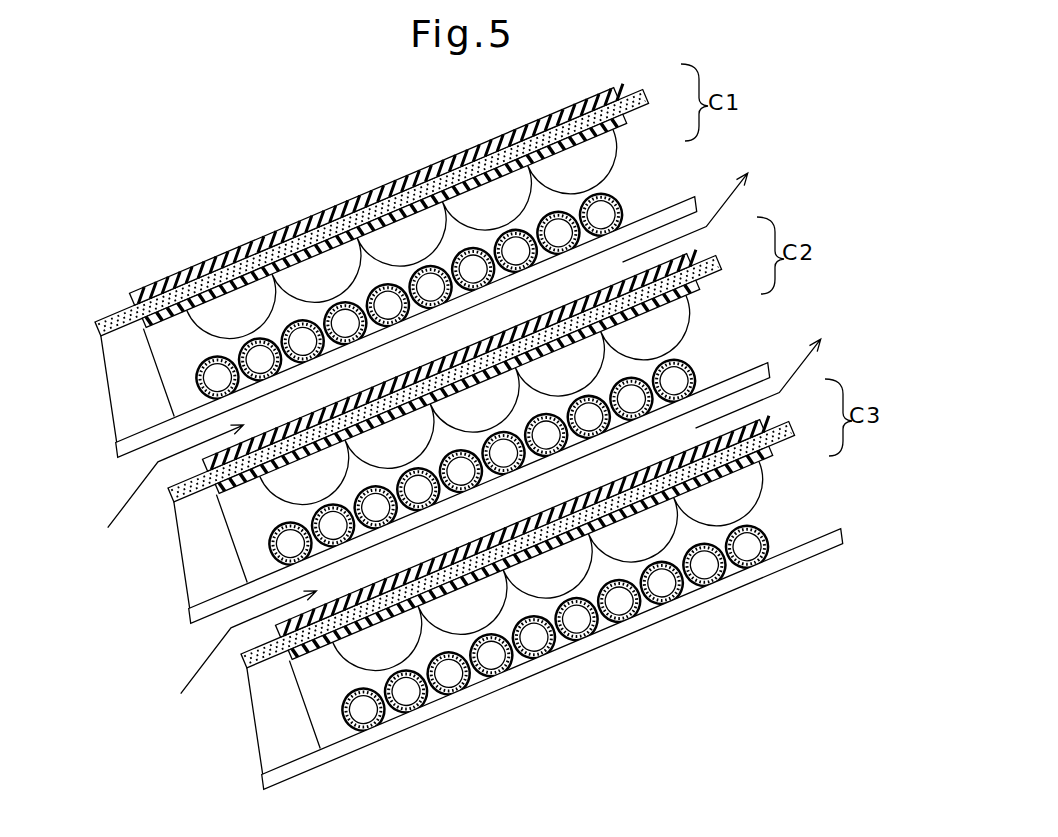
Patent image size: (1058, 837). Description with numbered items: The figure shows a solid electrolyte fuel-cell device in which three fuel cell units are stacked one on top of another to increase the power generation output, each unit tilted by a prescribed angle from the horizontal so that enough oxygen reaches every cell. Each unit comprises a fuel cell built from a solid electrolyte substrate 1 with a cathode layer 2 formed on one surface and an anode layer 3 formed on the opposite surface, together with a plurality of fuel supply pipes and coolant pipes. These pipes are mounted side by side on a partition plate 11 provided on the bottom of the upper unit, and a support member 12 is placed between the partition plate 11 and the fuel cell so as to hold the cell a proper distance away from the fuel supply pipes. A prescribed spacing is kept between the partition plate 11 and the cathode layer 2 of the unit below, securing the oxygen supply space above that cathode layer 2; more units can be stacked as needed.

The solid electrolyte substrate 1 is at (645, 97).
The cathode layer 2 is at (614, 88).
The anode layer 3 is at (628, 122).
The partition plate 11 is at (117, 456).
The support member 12 is at (110, 387).